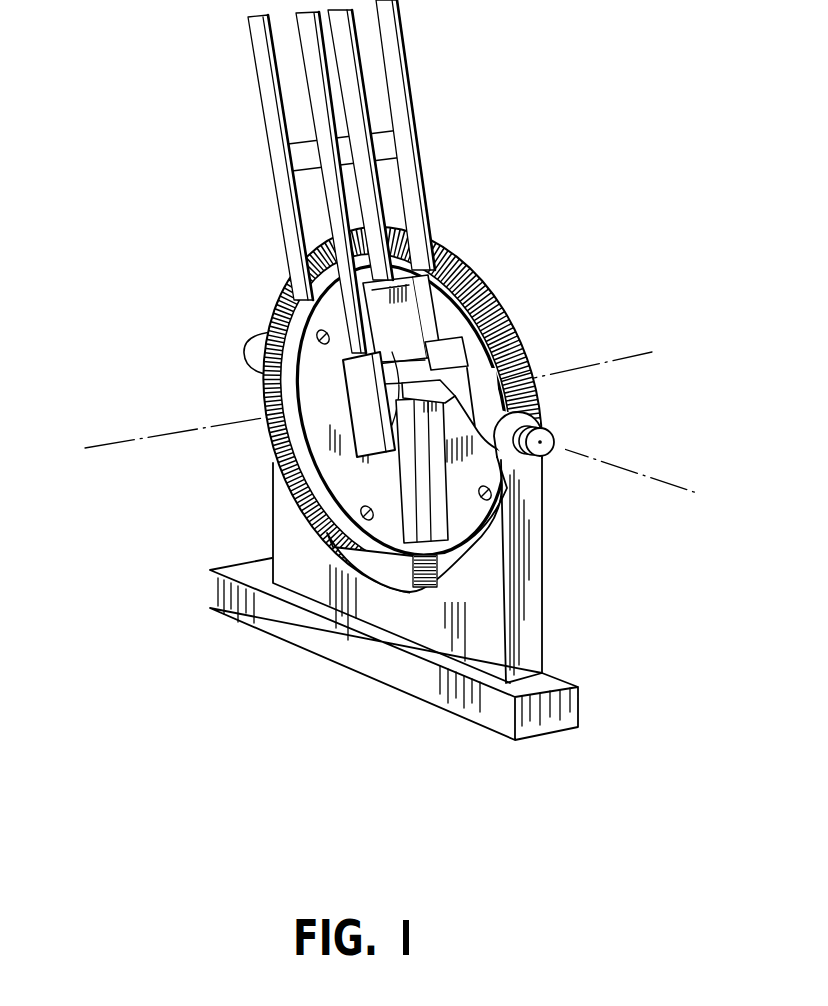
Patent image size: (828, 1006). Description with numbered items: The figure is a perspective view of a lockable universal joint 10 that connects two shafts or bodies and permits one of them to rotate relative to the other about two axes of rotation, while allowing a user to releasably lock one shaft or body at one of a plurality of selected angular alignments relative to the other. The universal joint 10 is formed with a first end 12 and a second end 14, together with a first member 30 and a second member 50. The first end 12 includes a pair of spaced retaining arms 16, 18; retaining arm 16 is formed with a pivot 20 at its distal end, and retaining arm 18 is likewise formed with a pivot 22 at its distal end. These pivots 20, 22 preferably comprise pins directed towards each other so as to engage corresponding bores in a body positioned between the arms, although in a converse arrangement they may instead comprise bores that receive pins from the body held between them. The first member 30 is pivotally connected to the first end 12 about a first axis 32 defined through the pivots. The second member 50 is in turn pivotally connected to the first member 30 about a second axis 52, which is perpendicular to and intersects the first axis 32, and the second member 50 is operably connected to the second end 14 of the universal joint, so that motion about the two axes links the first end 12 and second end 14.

The universal joint 10 is at (396, 370).
The first end 12 is at (342, 665).
The second end 14 is at (261, 102).
The retaining arm 16 is at (273, 502).
The retaining arm 18 is at (498, 562).
The pivot 20 is at (247, 356).
The pivot 22 is at (545, 438).
The first member 30 is at (507, 458).
The first axis 32 is at (680, 484).
The second member 50 is at (297, 305).
The second axis 52 is at (102, 444).